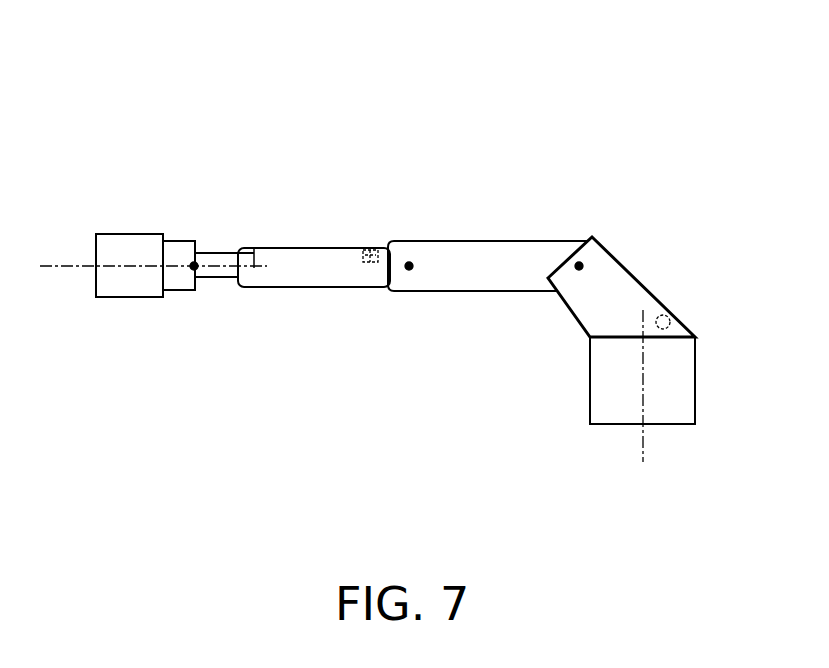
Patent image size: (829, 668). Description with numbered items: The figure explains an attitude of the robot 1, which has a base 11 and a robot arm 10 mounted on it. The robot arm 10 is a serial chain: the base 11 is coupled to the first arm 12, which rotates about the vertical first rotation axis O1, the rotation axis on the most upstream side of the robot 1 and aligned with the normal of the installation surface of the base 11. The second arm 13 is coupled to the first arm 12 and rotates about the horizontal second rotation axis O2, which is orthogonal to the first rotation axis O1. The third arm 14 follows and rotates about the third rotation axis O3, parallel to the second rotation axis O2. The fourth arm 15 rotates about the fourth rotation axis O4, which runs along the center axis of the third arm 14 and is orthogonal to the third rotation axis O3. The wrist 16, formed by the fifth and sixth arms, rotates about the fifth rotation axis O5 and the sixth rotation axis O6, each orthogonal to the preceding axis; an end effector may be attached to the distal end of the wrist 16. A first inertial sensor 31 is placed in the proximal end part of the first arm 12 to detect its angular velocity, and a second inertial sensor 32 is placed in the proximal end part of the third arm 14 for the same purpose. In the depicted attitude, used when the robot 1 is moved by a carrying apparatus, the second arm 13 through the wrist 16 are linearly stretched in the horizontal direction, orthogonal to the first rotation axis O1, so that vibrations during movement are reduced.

The robot 1 is at (286, 97).
The robot arm 10 is at (241, 142).
The base 11 is at (677, 382).
The first arm 12 is at (622, 292).
The second arm 13 is at (478, 253).
The third arm 14 is at (312, 257).
The fourth arm 15 is at (217, 258).
The wrist 16 is at (125, 229).
The first inertial sensor 31 is at (672, 319).
The second inertial sensor 32 is at (370, 245).
The first rotation axis O1 is at (644, 440).
The second rotation axis O2 is at (578, 272).
The third rotation axis O3 is at (411, 272).
The fourth rotation axis O4 is at (254, 248).
The fifth rotation axis O5 is at (200, 278).
The sixth rotation axis O6 is at (80, 265).